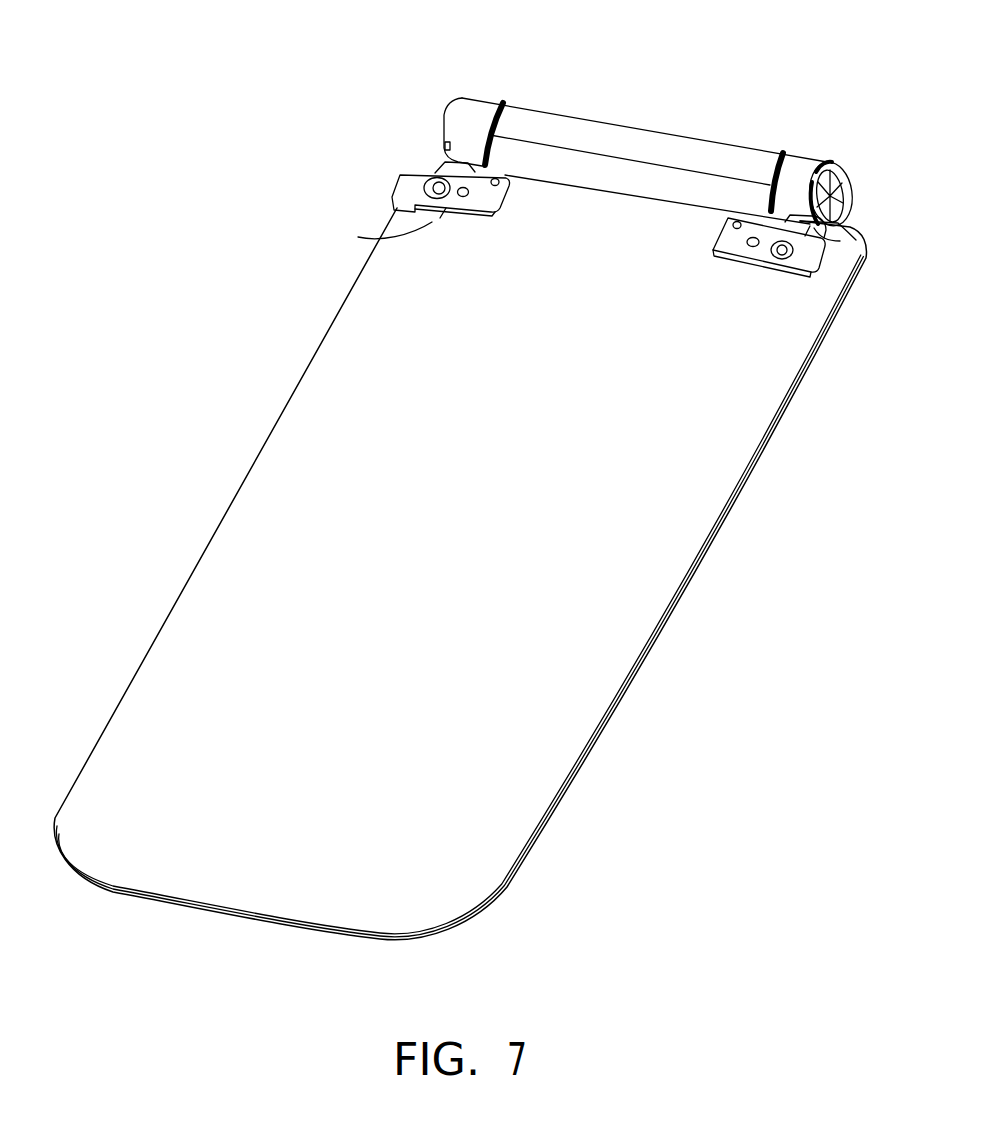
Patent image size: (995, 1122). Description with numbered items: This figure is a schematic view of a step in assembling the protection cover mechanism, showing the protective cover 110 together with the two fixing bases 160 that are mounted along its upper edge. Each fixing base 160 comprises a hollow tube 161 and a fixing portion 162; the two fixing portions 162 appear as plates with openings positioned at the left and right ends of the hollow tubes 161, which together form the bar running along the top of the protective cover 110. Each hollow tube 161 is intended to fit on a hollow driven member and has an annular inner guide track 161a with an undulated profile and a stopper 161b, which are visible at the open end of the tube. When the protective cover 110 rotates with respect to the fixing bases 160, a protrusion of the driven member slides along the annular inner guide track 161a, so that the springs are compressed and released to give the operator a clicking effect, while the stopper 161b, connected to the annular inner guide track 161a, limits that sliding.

The protective cover 110 is at (602, 617).
The fixing base 160 is at (452, 210).
The hollow tube 161 is at (473, 112).
The annular inner guide track 161a is at (847, 234).
The stopper 161b is at (853, 217).
The fixing portion 162 is at (413, 180).